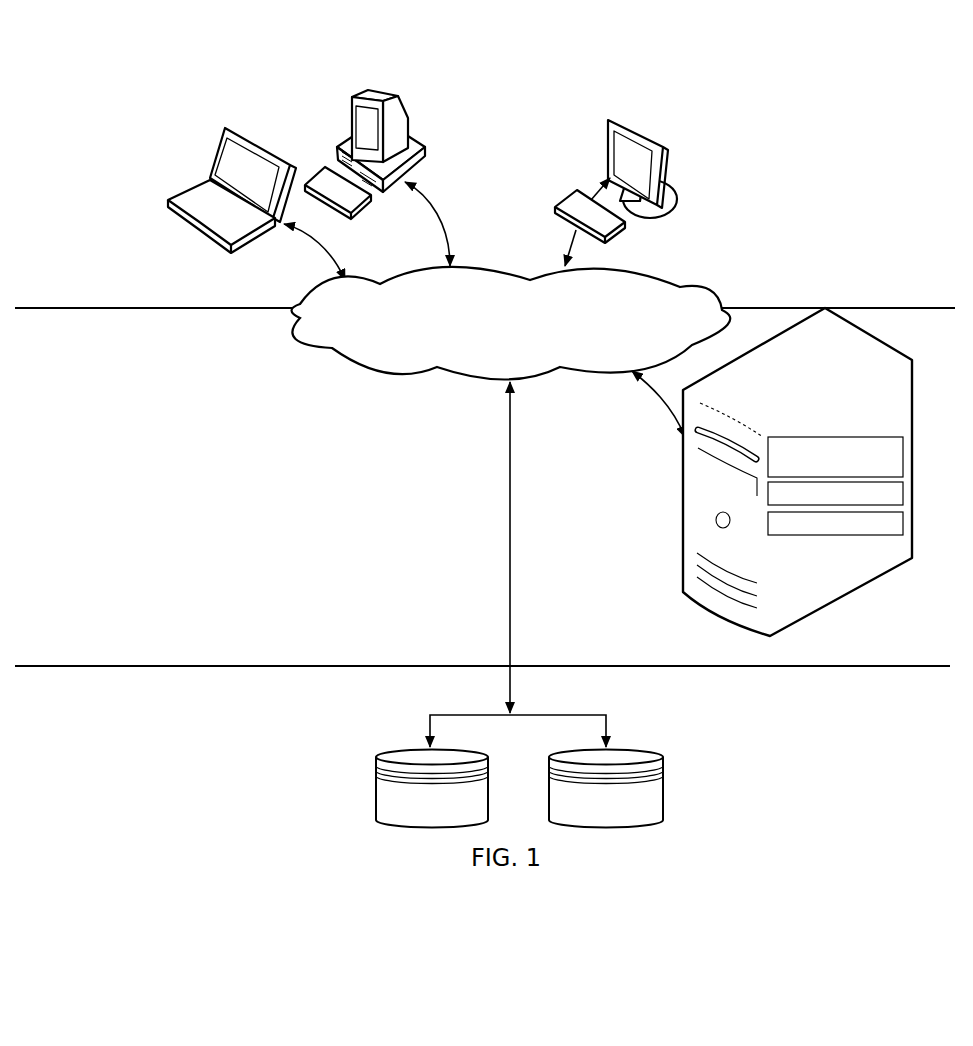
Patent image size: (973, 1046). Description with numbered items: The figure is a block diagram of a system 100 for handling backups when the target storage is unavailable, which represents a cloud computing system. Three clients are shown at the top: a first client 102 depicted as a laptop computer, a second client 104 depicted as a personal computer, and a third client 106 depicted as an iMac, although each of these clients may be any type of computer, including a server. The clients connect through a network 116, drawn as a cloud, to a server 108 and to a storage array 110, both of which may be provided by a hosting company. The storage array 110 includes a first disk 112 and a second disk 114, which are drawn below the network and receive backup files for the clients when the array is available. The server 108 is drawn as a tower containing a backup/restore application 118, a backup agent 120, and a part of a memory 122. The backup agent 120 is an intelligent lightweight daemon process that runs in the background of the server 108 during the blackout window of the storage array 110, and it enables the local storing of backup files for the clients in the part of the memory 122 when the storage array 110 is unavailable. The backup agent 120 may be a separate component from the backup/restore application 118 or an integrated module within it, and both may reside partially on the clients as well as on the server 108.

The system 100 is at (483, 105).
The first client 102 is at (225, 128).
The second client 104 is at (352, 97).
The third client 106 is at (608, 120).
The server 108 is at (766, 486).
The storage array 110 is at (638, 763).
The first disk 112 is at (392, 753).
The second disk 114 is at (562, 753).
The network 116 is at (511, 323).
The backup/restore application 118 is at (835, 457).
The backup agent 120 is at (835, 493).
The part of a memory 122 is at (835, 523).